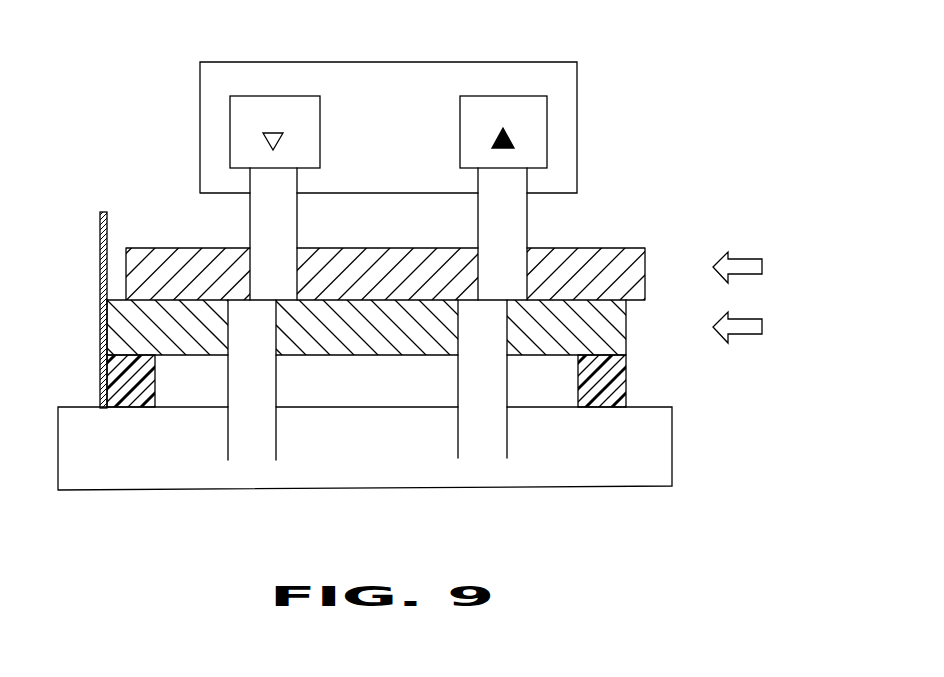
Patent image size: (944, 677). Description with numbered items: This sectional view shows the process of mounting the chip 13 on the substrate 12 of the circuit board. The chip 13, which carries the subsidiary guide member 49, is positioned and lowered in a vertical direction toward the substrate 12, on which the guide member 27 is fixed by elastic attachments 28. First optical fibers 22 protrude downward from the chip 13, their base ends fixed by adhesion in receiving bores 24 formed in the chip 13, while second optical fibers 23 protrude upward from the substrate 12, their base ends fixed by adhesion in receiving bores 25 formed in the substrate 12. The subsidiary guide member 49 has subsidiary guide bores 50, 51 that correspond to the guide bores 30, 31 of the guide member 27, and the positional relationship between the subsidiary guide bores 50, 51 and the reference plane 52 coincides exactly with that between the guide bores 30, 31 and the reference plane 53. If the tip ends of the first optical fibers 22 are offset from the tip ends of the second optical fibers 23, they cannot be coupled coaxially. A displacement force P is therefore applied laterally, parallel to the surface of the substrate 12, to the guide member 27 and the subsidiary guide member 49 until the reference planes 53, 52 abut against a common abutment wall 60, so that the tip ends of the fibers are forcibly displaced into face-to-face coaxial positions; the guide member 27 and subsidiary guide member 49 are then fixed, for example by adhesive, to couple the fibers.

The substrate 12 is at (392, 478).
The chip 13 is at (418, 62).
The first optical fiber 22 is at (250, 222).
The second optical fiber 23 is at (228, 383).
The receiving bore 24 is at (297, 181).
The receiving bore 25 is at (277, 425).
The guide member 27 is at (626, 327).
The elastic attachment 28 is at (107, 372).
The guide bore 30 is at (276, 325).
The guide bore 31 is at (505, 327).
The subsidiary guide member 49 is at (645, 262).
The subsidiary guide bore 50 is at (297, 271).
The subsidiary guide bore 51 is at (527, 266).
The reference plane 52 is at (118, 278).
The reference plane 53 is at (100, 336).
The common abutment wall 60 is at (100, 218).
The displacement force P is at (762, 266).